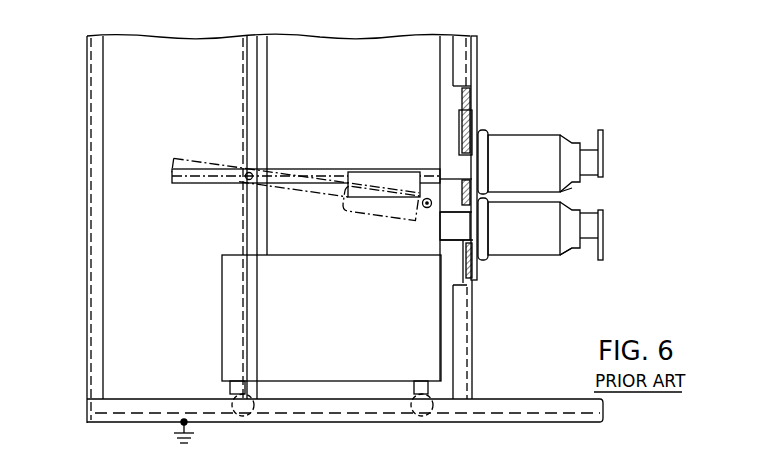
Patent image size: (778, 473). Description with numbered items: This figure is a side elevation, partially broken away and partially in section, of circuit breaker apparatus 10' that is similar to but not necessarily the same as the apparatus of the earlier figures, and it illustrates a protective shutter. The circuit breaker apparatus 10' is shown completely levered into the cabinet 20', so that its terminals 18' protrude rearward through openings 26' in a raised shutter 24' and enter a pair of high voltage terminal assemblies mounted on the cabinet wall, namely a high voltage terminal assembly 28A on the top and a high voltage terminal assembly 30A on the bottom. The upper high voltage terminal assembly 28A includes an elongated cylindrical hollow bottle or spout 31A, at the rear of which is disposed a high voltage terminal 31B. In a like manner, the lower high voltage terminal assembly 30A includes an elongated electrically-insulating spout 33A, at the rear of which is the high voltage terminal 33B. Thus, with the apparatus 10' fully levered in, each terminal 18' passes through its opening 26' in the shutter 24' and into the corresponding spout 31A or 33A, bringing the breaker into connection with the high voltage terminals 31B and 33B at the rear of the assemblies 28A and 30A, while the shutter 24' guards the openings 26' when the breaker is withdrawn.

The cabinet 20' is at (279, 217).
The raised shutter 24' is at (436, 110).
The openings 26' is at (418, 159).
The terminals 18' is at (437, 253).
The high voltage terminal assembly 28A is at (528, 137).
The high voltage terminal assembly 30A is at (538, 252).
The elongated cylindrical hollow bottle or spout 31A is at (568, 187).
The high voltage terminal 31B is at (603, 160).
The elongated electrically-insulating spout 33A is at (560, 243).
The high voltage terminal 33B is at (603, 229).
The circuit breaker apparatus 10' is at (345, 243).